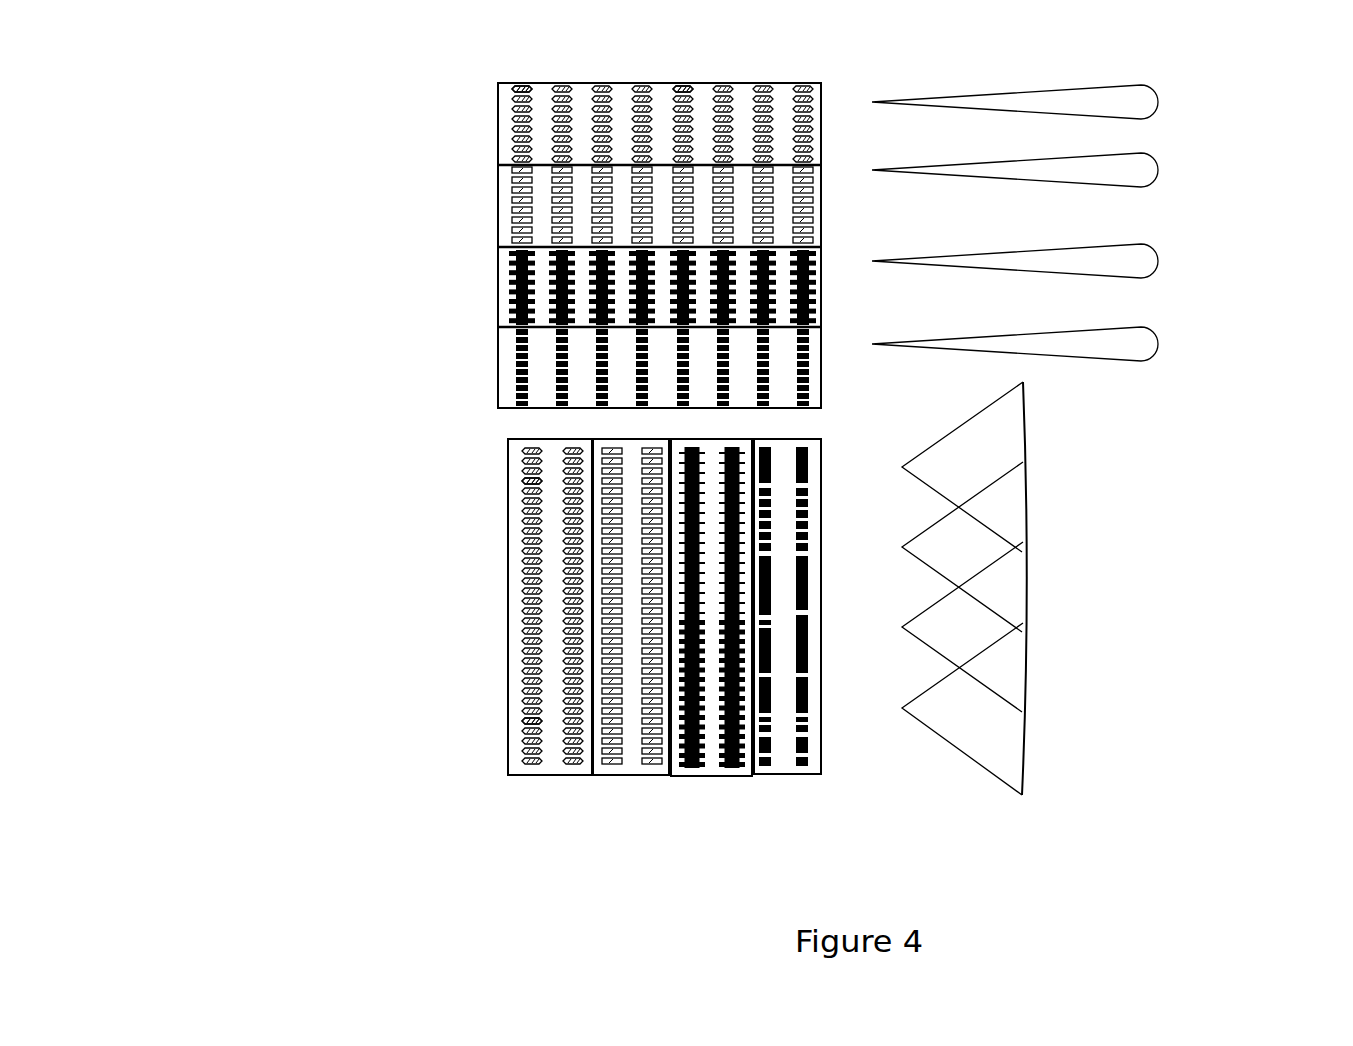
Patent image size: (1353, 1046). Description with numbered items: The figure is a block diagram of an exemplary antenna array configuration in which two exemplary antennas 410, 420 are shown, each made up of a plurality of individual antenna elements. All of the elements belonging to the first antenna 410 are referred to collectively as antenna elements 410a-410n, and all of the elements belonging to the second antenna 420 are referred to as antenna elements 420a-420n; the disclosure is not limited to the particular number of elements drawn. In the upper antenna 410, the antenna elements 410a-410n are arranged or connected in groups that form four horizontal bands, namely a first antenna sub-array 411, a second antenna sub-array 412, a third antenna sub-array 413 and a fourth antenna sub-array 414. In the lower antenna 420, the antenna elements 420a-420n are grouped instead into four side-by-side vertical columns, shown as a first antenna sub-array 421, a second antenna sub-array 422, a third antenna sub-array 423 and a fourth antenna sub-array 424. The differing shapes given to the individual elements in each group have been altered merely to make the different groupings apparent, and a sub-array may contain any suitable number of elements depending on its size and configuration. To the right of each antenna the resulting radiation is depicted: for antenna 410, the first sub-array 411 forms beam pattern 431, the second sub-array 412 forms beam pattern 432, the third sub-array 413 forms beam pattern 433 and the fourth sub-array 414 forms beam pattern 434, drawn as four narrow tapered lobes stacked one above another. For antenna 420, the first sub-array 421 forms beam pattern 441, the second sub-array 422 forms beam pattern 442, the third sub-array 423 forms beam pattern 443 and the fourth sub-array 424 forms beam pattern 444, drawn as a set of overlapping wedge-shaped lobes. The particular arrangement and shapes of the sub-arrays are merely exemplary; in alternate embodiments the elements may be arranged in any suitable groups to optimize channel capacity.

The antenna 410 is at (517, 226).
The antenna element 410a is at (560, 88).
The antenna element 410n is at (688, 95).
The first antenna sub-array 411 is at (610, 103).
The second antenna sub-array 412 is at (497, 202).
The third antenna sub-array 413 is at (495, 287).
The fourth antenna sub-array 414 is at (495, 365).
The antenna 420 is at (548, 650).
The antenna element 420a is at (527, 482).
The antenna element 420n is at (535, 720).
The first antenna sub-array 421 is at (472, 639).
The second antenna sub-array 422 is at (630, 777).
The third antenna sub-array 423 is at (720, 777).
The fourth antenna sub-array 424 is at (798, 777).
The beam pattern 431 is at (1158, 101).
The beam pattern 432 is at (1158, 170).
The beam pattern 433 is at (1158, 260).
The beam pattern 434 is at (1158, 343).
The beam pattern 441 is at (1018, 433).
The beam pattern 442 is at (968, 541).
The beam pattern 443 is at (970, 628).
The beam pattern 444 is at (1000, 745).